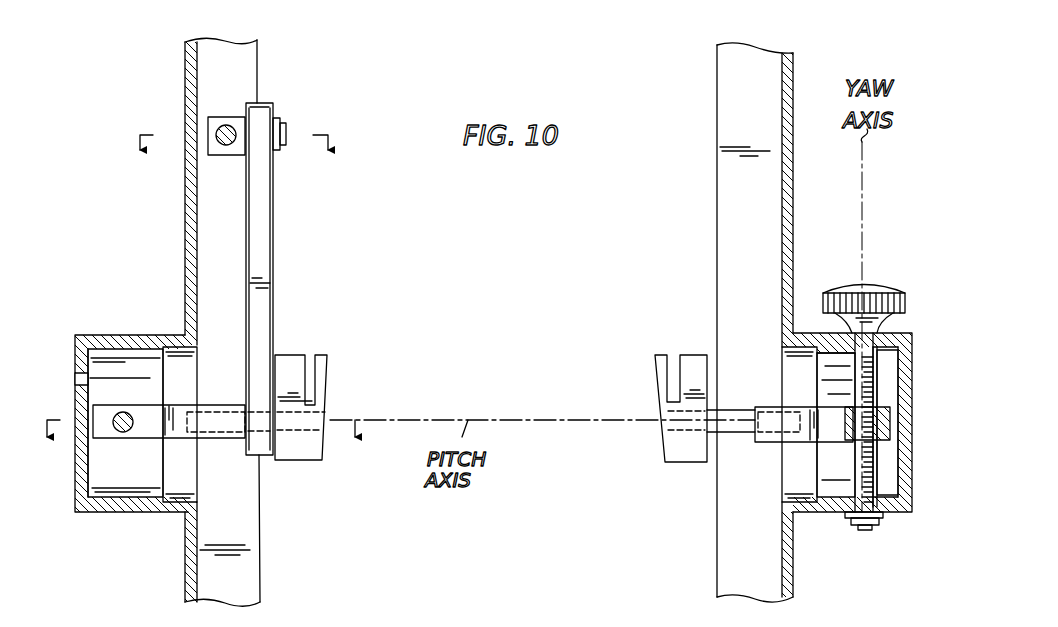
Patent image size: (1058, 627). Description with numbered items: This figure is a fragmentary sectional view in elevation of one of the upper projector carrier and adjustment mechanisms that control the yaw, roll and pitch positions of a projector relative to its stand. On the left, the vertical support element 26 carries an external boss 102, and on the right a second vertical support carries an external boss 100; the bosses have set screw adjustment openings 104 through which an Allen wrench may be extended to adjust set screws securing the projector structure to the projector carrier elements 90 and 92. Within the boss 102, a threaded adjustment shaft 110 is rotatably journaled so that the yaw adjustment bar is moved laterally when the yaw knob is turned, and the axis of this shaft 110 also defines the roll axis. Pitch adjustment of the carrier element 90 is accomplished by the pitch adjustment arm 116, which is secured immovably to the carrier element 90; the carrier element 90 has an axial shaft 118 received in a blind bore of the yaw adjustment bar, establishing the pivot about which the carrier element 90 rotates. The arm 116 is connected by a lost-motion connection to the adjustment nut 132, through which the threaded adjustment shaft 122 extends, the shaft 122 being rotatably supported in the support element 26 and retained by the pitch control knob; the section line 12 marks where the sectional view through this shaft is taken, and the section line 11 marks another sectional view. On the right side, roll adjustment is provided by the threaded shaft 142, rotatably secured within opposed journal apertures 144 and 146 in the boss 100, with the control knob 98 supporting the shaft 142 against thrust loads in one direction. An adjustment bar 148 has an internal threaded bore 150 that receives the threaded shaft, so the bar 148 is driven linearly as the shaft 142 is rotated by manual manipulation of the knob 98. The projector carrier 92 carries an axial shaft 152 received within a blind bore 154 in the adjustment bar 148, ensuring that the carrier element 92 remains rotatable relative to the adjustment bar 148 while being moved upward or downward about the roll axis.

The vertical support element 26 is at (252, 578).
The pitch adjustment arm 116 is at (266, 237).
The adjustment nut 132 is at (224, 146).
The threaded adjustment shaft 122 is at (228, 125).
The section line 12— 12 is at (235, 161).
The section line 11- 11 is at (203, 445).
The external boss 102 is at (95, 511).
The threaded adjustment shaft 110 is at (123, 432).
The projector carrier element 90 is at (308, 453).
The axial shaft 118 is at (312, 408).
The projector carrier element 92 is at (687, 463).
The axial shaft 152 is at (667, 427).
The blind bore 154 is at (772, 434).
The adjustment bar 148 is at (810, 413).
The external boss 100 is at (908, 403).
The set screw adjustment opening 104 is at (905, 382).
The journal aperture 144 is at (879, 345).
The threaded shaft 142 is at (857, 482).
The internal threaded bore 150 is at (868, 441).
The journal aperture 146 is at (877, 511).
The control knob 98 is at (885, 287).